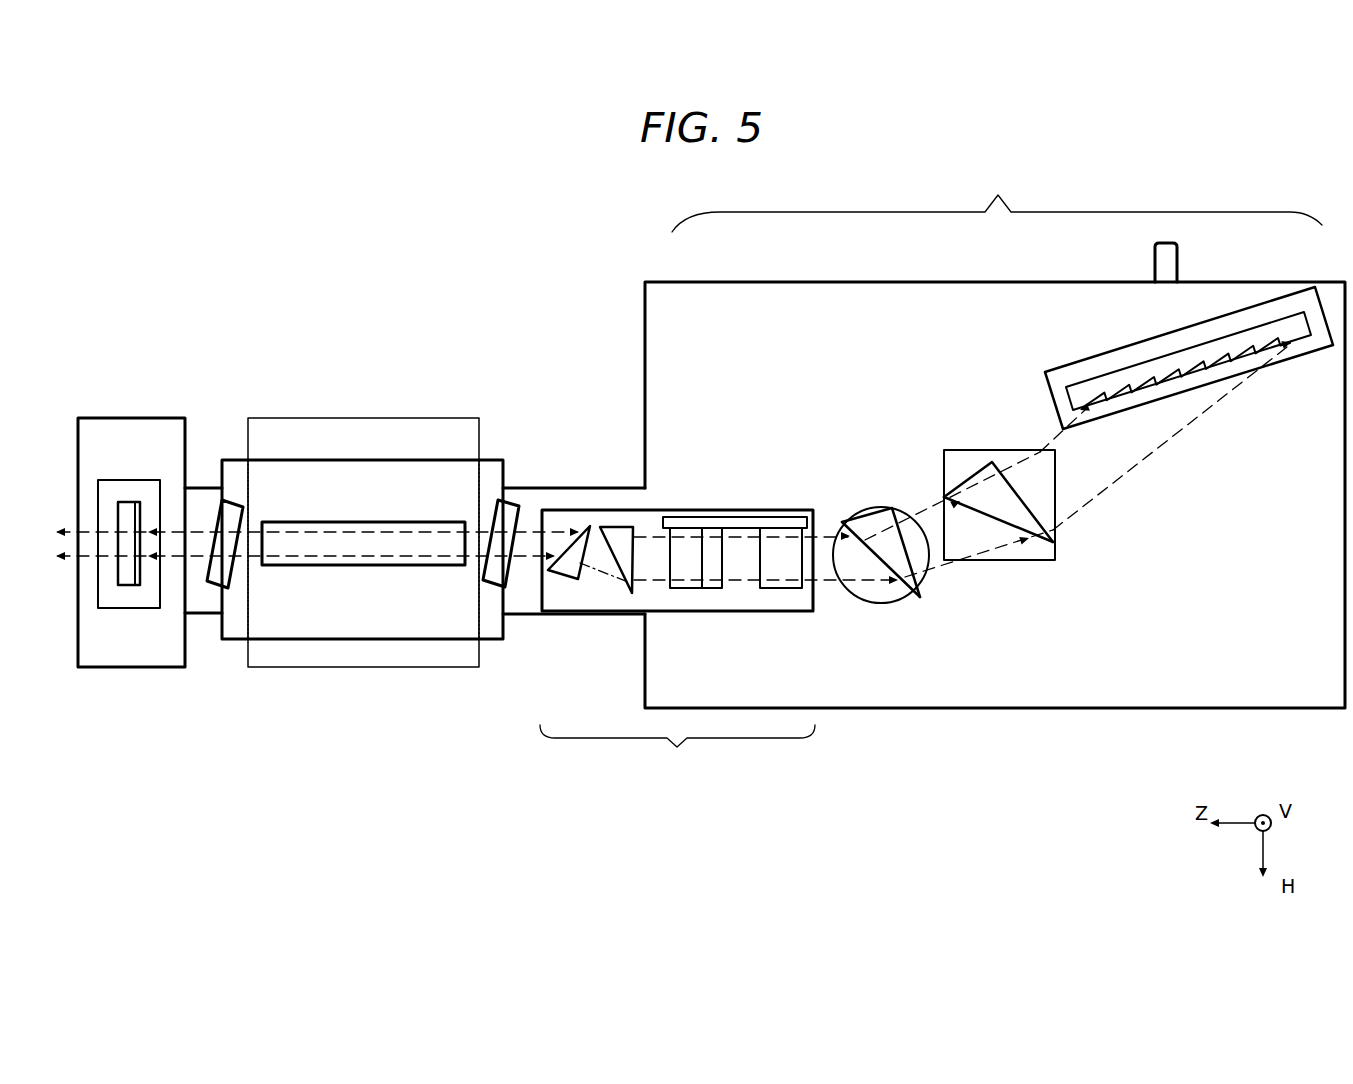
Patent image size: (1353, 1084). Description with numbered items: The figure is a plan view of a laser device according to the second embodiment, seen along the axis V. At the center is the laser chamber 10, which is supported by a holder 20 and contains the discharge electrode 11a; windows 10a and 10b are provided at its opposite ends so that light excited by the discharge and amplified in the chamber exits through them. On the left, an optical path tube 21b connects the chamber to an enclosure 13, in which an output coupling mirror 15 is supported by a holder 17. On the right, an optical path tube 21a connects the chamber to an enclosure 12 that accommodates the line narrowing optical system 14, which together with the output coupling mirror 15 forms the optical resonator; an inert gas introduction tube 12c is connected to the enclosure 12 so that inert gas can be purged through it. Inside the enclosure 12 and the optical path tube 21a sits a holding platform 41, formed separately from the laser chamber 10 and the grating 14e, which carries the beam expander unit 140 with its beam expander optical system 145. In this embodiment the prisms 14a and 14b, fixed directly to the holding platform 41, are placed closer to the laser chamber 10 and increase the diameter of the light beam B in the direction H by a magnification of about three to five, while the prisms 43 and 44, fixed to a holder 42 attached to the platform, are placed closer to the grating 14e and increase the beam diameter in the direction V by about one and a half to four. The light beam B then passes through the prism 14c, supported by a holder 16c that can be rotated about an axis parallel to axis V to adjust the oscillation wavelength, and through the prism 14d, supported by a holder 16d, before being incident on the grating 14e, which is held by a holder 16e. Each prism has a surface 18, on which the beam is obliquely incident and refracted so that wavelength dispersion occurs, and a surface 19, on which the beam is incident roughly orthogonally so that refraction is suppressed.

The laser chamber 10 is at (363, 534).
The window 10a is at (482, 572).
The window 10b is at (243, 513).
The discharge electrode 11a is at (310, 522).
The enclosure 12 is at (990, 489).
The inert gas introduction tube 12c is at (1180, 263).
The enclosure 13 is at (131, 546).
The line narrowing optical system 14 is at (1011, 198).
The prism 14a is at (567, 555).
The prism 14b is at (615, 528).
The prism 14c is at (867, 508).
The prism 14d is at (992, 462).
The grating 14e is at (1087, 373).
The output coupling mirror 15 is at (129, 585).
The holder 16c is at (881, 585).
The holder 16d is at (996, 568).
The holder 16e is at (1180, 422).
The holder 17 is at (110, 608).
The surface 18 is at (883, 567).
The surface 19 is at (893, 512).
The holder 20 is at (357, 668).
The optical path tube 21a is at (582, 617).
The optical path tube 21b is at (207, 615).
The holding platform 41 is at (677, 553).
The holder 42 is at (802, 517).
The prism 43 is at (673, 533).
The prism 44 is at (778, 532).
The beam expander unit 140 is at (718, 805).
The beam expander optical system 145 is at (706, 751).
The light beam B is at (515, 557).